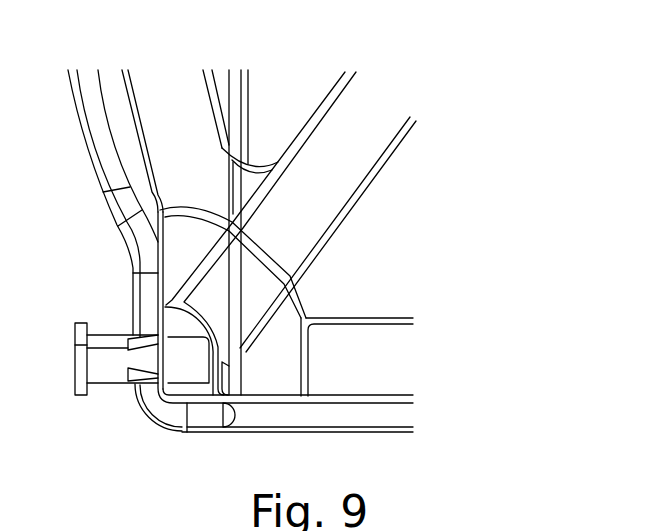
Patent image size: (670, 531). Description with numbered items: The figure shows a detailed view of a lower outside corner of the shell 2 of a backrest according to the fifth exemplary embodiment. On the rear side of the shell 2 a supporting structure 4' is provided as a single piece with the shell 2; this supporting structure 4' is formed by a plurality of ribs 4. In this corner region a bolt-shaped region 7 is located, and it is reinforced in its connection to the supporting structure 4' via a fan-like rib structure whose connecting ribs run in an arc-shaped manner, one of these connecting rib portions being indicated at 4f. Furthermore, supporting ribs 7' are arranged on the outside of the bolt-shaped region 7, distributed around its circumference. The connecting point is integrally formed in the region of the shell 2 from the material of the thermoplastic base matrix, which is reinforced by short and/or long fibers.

The shell 2 is at (290, 95).
The ribs 4 is at (95, 203).
The supporting structure 4' is at (152, 232).
The strut node 4f is at (268, 252).
The bolt-shaped region 7 is at (92, 374).
The supporting ribs 7' is at (92, 312).